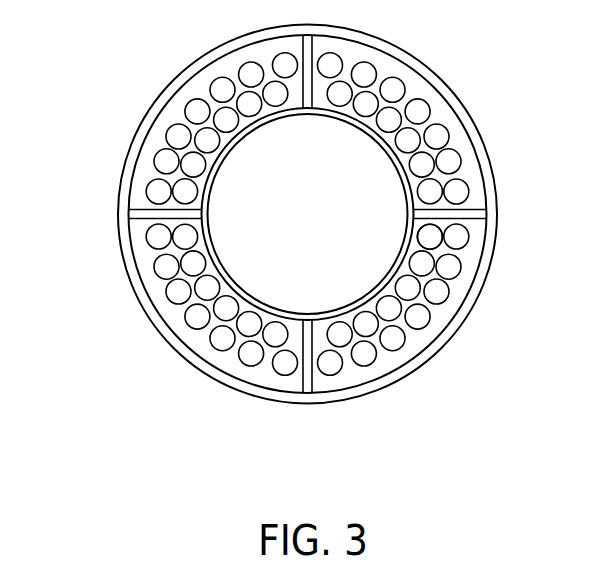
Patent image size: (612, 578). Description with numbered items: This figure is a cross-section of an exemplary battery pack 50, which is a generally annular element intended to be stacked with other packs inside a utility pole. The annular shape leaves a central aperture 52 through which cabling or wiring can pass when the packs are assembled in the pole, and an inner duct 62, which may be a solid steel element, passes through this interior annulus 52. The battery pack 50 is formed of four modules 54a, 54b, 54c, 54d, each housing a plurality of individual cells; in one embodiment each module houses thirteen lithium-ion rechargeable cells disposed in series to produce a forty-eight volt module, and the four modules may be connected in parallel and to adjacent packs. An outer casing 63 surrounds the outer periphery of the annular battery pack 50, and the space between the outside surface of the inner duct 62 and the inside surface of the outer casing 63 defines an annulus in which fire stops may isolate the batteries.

The battery pack 50 is at (135, 333).
The central aperture 52 is at (323, 220).
The module 54a is at (198, 82).
The module 54b is at (425, 88).
The module 54c is at (440, 316).
The module 54d is at (147, 260).
The inner duct 62 is at (441, 236).
The outer casing 63 is at (497, 185).